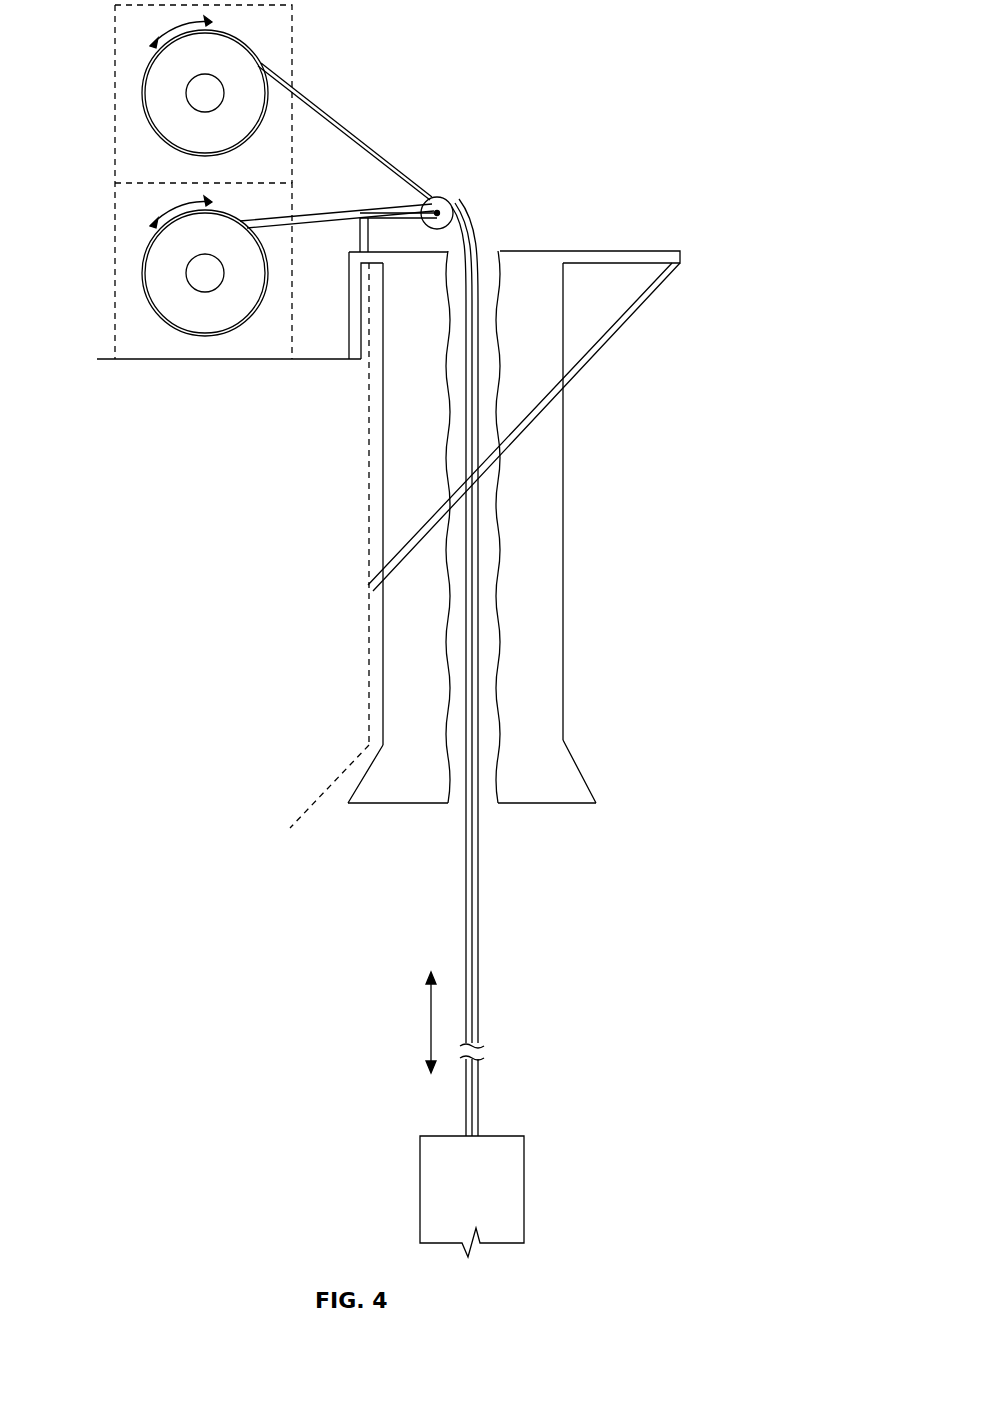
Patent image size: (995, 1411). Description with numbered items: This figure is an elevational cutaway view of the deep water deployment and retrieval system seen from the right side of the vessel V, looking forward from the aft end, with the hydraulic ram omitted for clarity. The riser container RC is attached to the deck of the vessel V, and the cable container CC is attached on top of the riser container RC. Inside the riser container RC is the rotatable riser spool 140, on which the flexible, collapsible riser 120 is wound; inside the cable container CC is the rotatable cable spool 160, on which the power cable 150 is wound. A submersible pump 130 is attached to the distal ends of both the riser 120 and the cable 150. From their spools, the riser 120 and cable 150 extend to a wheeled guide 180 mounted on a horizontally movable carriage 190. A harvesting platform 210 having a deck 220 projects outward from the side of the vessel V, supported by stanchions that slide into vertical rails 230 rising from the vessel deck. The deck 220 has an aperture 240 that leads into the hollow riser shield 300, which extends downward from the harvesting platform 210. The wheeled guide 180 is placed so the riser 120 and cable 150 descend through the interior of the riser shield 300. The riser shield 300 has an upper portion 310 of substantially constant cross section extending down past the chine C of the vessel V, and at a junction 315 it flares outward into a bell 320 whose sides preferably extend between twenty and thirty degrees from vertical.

The riser 120 is at (465, 945).
The submersible pump 130 is at (510, 1190).
The riser spool 140 is at (148, 250).
The power cable 150 is at (480, 988).
The cable spool 160 is at (148, 73).
The wheeled guide 180 is at (455, 207).
The horizontally movable carriage 190 is at (400, 200).
The harvesting platform 210 is at (640, 178).
The deck 220 is at (630, 248).
The vertical rails 230 is at (350, 350).
The aperture 240 is at (578, 362).
The riser shield 300 is at (698, 490).
The upper portion 310 is at (565, 530).
The junction 315 is at (565, 742).
The bell 320 is at (584, 782).
The cable intermodal shipping container CC is at (115, 103).
The riser intermodal shipping container RC is at (115, 296).
The vessel V is at (207, 552).
The chine C is at (368, 742).